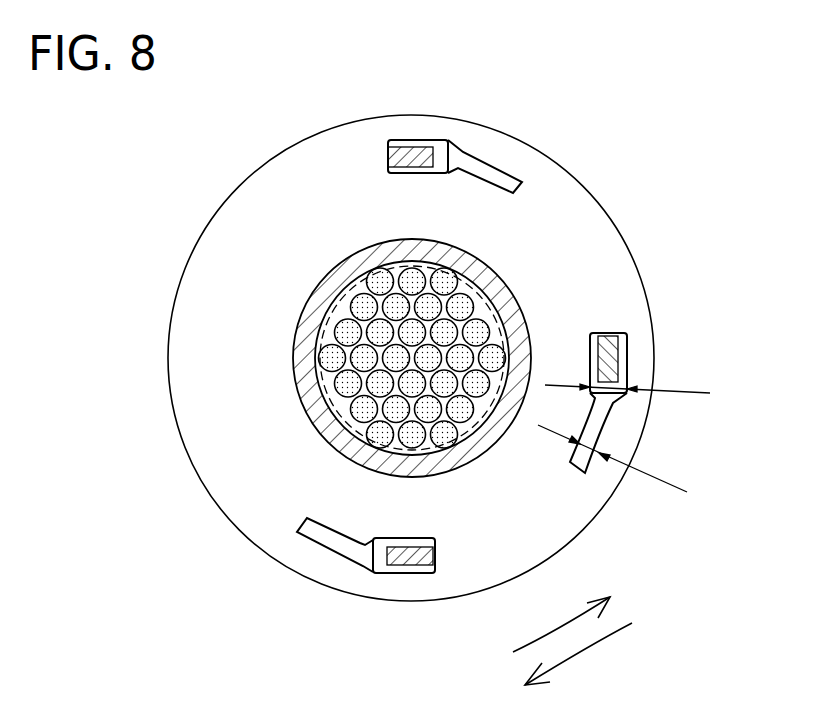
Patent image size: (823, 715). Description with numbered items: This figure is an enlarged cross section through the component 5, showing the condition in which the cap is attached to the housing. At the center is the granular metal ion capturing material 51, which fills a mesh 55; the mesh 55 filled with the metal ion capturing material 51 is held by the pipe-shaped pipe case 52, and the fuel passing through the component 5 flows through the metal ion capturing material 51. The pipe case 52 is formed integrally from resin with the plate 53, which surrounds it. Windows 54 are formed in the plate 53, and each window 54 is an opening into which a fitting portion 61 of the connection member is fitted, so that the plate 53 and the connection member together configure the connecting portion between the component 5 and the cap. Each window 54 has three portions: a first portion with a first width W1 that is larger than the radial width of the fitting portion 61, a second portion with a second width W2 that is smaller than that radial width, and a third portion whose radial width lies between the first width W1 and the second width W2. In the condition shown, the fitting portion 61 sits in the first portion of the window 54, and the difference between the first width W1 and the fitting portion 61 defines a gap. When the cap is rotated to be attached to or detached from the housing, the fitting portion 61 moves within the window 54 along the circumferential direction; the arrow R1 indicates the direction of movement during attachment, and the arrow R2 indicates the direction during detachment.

The component 5 is at (466, 342).
The metal ion capturing material 51 is at (443, 283).
The pipe case 52 is at (485, 277).
The plate 53 is at (589, 262).
The window 54 is at (575, 145).
The mesh 55 is at (527, 307).
The fitting portion 61 is at (410, 150).
The first width W1 is at (627, 379).
The second width W2 is at (612, 458).
The first direction R1 is at (555, 635).
The second direction R2 is at (598, 650).